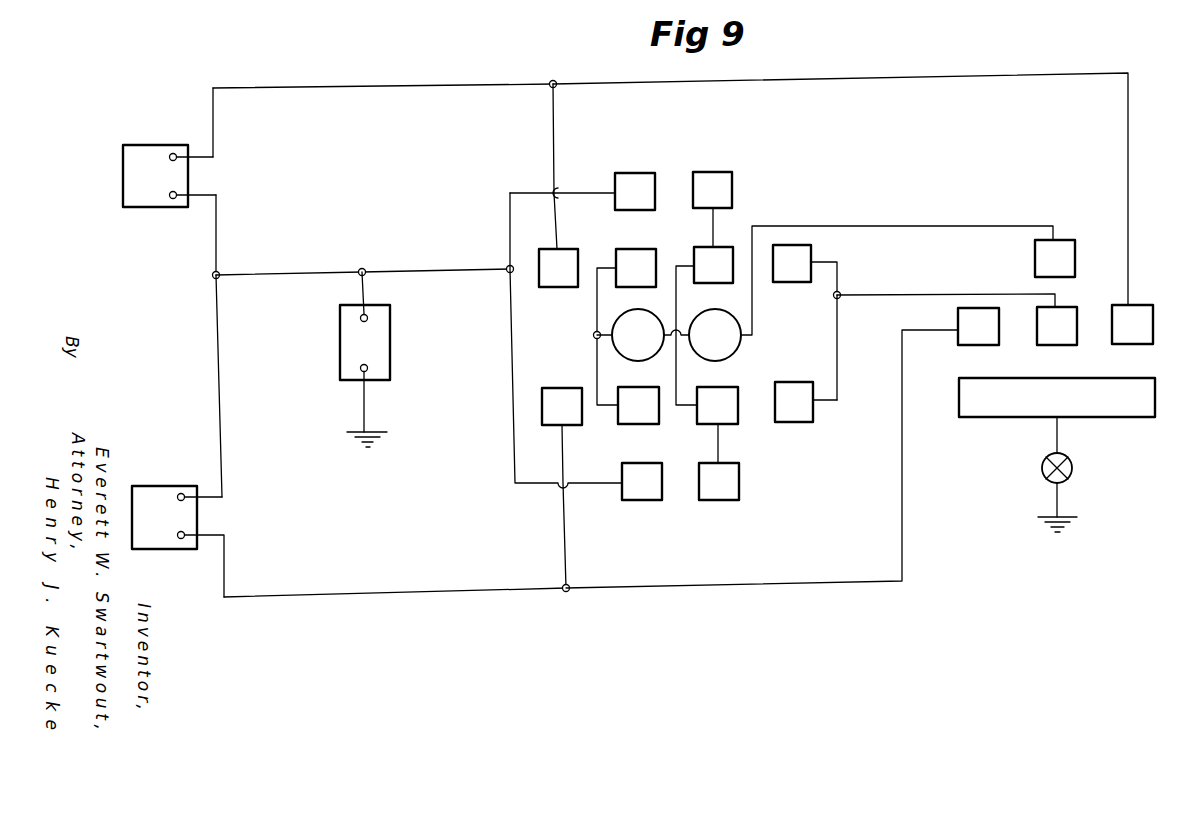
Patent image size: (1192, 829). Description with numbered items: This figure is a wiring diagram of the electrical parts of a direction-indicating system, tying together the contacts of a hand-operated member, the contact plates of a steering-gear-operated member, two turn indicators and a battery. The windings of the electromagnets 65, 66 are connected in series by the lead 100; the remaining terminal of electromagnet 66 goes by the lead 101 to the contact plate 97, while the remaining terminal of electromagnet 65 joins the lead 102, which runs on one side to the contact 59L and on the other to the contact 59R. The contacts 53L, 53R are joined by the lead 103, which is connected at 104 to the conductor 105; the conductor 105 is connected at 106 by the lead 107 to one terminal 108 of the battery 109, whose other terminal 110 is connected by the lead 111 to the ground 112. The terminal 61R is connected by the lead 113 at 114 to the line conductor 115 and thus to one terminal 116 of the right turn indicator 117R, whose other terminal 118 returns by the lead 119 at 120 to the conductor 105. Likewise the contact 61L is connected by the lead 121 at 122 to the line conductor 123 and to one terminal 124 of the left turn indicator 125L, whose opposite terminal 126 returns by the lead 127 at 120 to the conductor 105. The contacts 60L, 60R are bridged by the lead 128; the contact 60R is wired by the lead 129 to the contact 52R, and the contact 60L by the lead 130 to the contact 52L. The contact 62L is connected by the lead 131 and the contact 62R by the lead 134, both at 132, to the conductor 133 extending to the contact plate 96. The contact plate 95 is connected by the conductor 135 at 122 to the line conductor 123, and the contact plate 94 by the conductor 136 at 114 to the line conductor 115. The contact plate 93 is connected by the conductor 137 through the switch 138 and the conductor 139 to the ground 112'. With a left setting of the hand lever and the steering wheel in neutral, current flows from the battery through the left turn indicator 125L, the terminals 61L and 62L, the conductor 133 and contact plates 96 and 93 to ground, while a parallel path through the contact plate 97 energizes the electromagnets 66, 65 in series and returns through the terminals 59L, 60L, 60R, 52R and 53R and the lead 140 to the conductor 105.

The line conductor 115 is at (362, 88).
The connection point 114 is at (556, 82).
The conductor 136 is at (865, 79).
The right turn indicator 117R is at (125, 178).
The terminal 116 is at (173, 153).
The terminal 118 is at (173, 199).
The lead 119 is at (217, 235).
The connection point 120 is at (212, 275).
The lead 127 is at (220, 412).
The conductor 105 is at (262, 272).
The connection point 106 is at (364, 268).
The connection point 104 is at (507, 273).
The lead 107 is at (360, 290).
The battery terminal 108 is at (368, 316).
The battery 109 is at (384, 340).
The battery terminal 110 is at (368, 370).
The lead 111 is at (364, 408).
The ground 112 is at (382, 450).
The lead 103 is at (513, 396).
The lead 113 is at (552, 155).
The lead 140 is at (558, 188).
The contact 53R is at (625, 178).
The contact 52R is at (710, 176).
The lead 129 is at (716, 224).
The terminal 61R is at (553, 257).
The contact 59R is at (636, 256).
The contact 60R is at (710, 255).
The contact 62R is at (800, 258).
The lead 134 is at (840, 291).
The conductor 133 is at (930, 294).
The contact plate 97 is at (1058, 268).
The lead 102 is at (596, 302).
The lead 128 is at (675, 294).
The lead 100 is at (680, 330).
The lead 101 is at (753, 314).
The electromagnet 65 is at (636, 355).
The electromagnet 66 is at (712, 355).
The connection point 132 is at (835, 300).
The lead 131 is at (838, 360).
The contact 61L is at (560, 418).
The contact 59L is at (638, 415).
The contact 60L is at (716, 415).
The lead 130 is at (720, 446).
The contact 62L is at (800, 418).
The contact 53L is at (642, 495).
The contact 52L is at (724, 497).
The lead 121 is at (566, 530).
The left turn indicator 125L is at (140, 490).
The terminal 126 is at (185, 494).
The terminal 124 is at (182, 540).
The line conductor 123 is at (424, 597).
The connection point 122 is at (568, 592).
The conductor 135 is at (704, 584).
The contact plate 95 is at (978, 340).
The contact plate 96 is at (1056, 334).
The contact plate 94 is at (1133, 334).
The contact plate 93 is at (1090, 405).
The conductor 137 is at (1055, 434).
The switch 138 is at (1073, 466).
The conductor 139 is at (1060, 500).
The ground 112' is at (1078, 538).